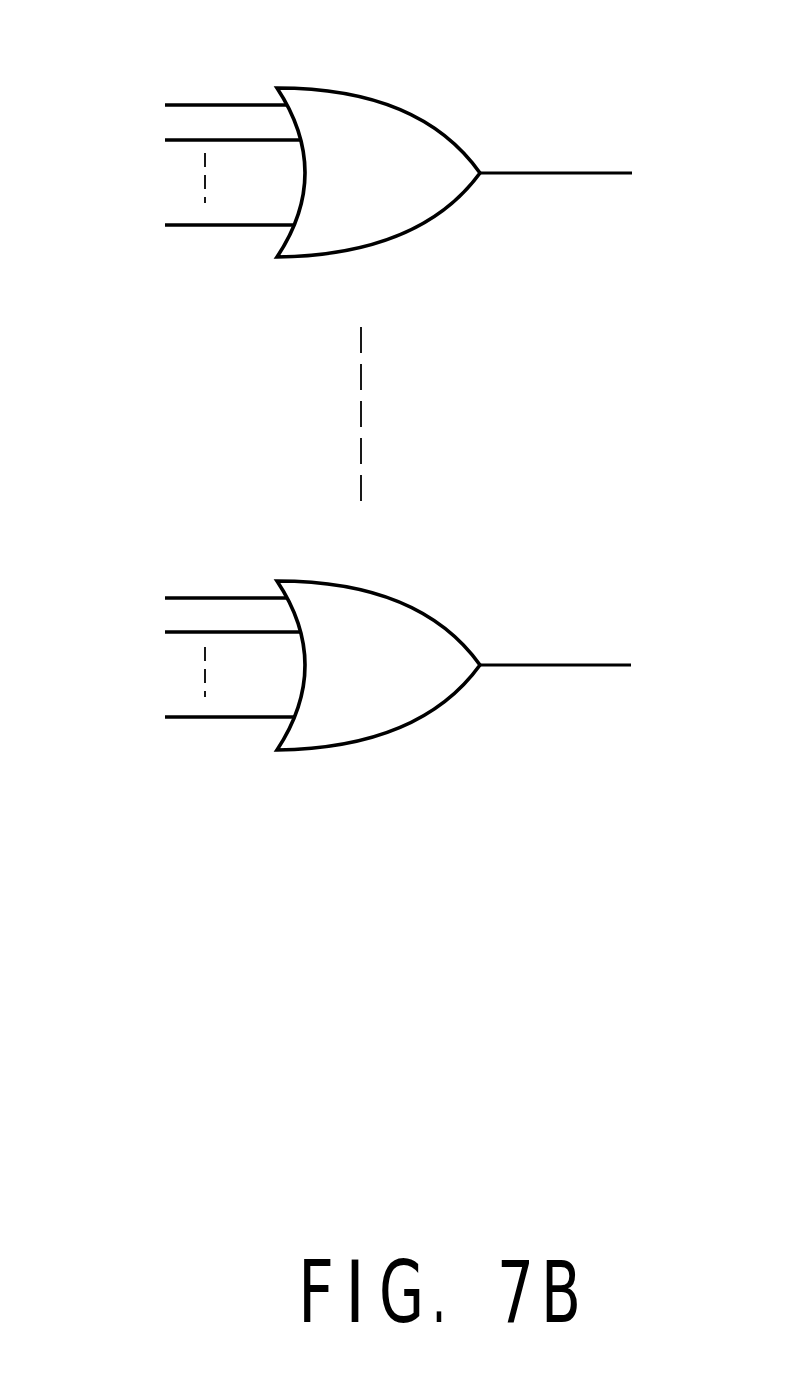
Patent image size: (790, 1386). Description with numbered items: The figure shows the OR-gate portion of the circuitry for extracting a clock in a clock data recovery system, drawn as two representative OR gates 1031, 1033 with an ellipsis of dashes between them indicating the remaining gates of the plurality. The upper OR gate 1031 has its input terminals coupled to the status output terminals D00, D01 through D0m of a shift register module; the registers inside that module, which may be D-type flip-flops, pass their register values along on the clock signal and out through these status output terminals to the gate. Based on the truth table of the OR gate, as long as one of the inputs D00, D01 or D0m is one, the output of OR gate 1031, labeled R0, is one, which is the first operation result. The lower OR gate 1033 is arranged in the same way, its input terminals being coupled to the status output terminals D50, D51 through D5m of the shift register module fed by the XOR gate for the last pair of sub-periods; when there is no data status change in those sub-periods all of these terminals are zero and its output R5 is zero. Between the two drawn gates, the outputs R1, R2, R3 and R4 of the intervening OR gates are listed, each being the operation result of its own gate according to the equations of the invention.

The OR gate 1031 is at (375, 128).
The OR gate 1033 is at (375, 628).
The status output terminal D00 is at (177, 88).
The status output terminal D01 is at (184, 139).
The status output terminal D0m is at (180, 201).
The status output terminal D50 is at (177, 581).
The status output terminal D51 is at (184, 631).
The status output terminal D5m is at (180, 694).
The operation result R0 is at (582, 163).
The operation result R1 is at (664, 268).
The operation result R2 is at (664, 350).
The operation result R3 is at (664, 426).
The operation result R4 is at (664, 506).
The operation result R5 is at (582, 656).